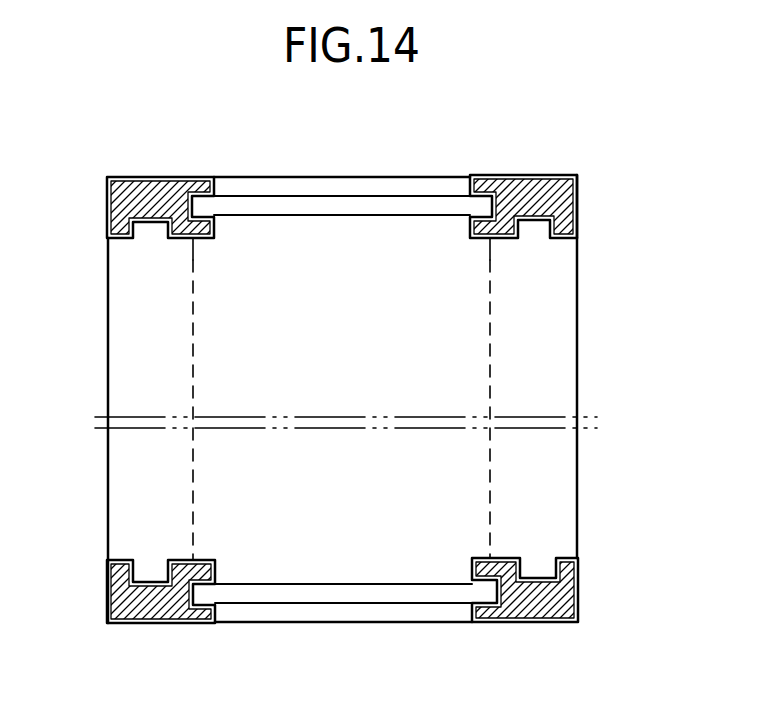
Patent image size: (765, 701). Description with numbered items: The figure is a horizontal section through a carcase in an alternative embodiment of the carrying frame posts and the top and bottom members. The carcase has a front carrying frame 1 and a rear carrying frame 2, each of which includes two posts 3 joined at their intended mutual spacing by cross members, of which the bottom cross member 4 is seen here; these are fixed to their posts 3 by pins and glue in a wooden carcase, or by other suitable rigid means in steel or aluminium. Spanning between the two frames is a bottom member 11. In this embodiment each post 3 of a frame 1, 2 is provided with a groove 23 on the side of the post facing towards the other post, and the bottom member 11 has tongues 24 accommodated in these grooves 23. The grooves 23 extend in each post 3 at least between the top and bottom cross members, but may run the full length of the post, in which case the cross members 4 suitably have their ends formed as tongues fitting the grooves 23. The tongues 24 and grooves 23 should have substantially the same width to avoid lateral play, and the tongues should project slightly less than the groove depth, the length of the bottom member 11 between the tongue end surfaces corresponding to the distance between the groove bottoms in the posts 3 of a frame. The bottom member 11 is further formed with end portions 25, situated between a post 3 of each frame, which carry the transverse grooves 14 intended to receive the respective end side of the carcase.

The front carrying frame 1 is at (98, 570).
The rear carrying frame 2 is at (598, 182).
The post 3 is at (107, 192).
The bottom cross member 4 is at (128, 485).
The bottom member 11 is at (565, 328).
The transverse groove 14 is at (330, 203).
The groove 23 is at (524, 196).
The tongue 24 is at (558, 227).
The end portion 25 is at (410, 190).